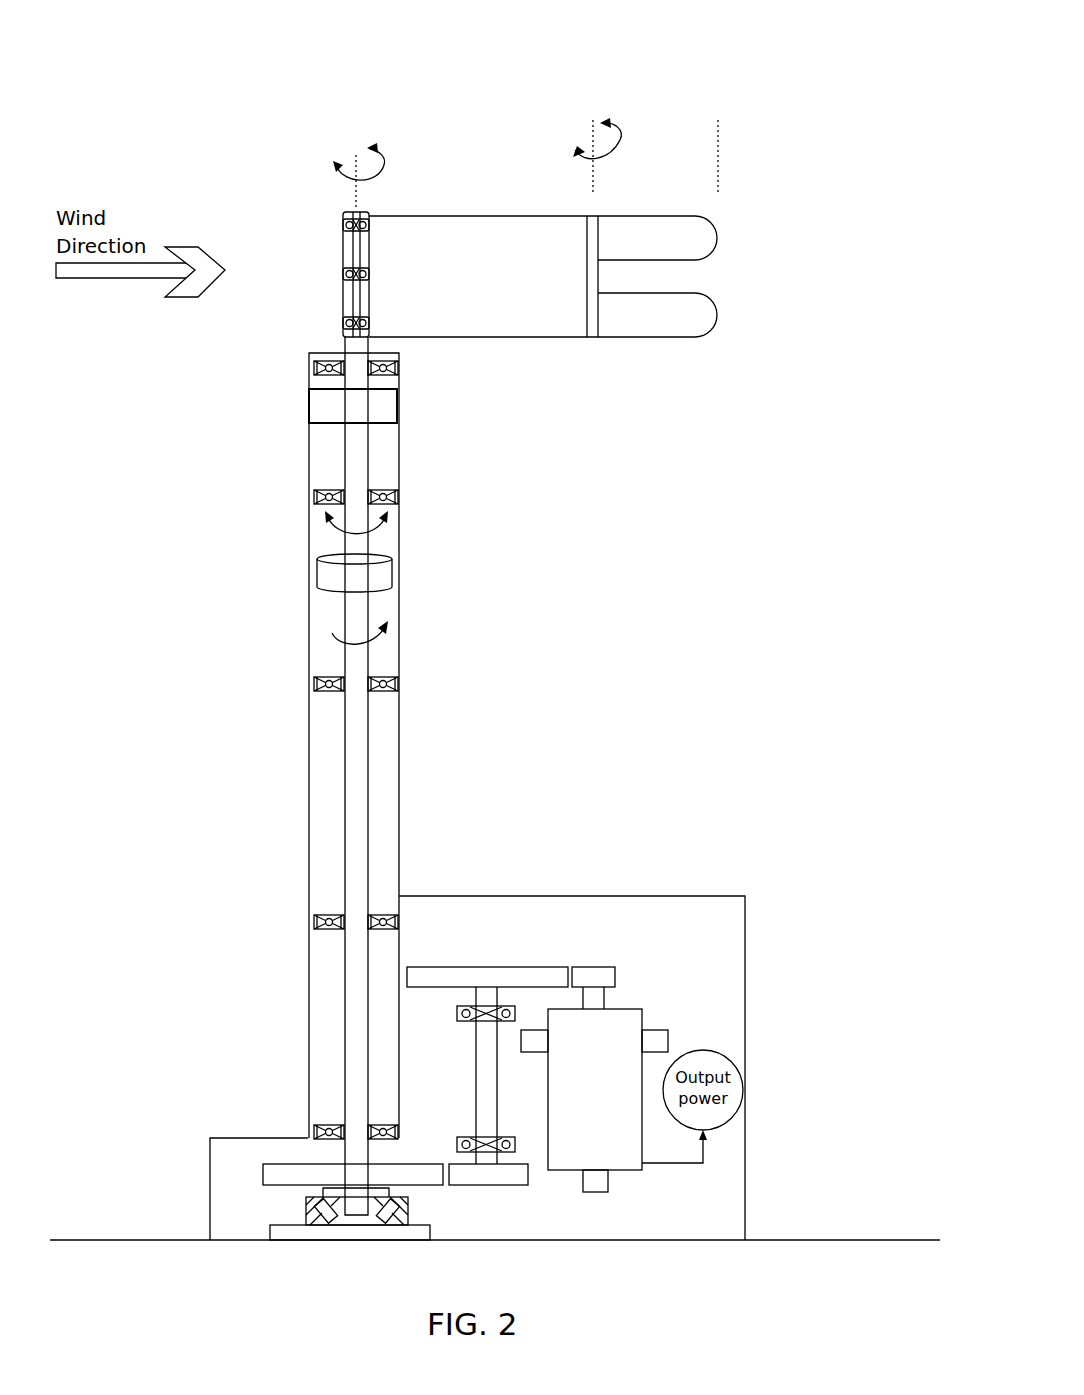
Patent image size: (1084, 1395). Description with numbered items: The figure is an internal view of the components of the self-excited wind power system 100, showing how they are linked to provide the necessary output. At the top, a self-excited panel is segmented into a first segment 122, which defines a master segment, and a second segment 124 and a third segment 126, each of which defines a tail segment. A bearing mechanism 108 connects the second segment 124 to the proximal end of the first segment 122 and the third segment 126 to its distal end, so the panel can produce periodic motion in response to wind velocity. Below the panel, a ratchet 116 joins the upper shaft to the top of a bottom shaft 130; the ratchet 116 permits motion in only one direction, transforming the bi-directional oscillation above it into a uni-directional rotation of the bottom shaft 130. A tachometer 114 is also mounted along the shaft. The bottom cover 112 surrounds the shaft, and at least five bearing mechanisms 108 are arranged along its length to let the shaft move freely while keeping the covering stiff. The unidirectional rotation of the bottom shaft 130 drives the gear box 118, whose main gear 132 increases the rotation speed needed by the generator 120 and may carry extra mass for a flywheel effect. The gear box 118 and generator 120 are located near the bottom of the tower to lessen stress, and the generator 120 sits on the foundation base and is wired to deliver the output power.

The self-excited wind power system 100 is at (203, 72).
The bearing mechanism 108 is at (341, 223).
The bottom cover 112 is at (399, 633).
The tachometer 114 is at (309, 407).
The ratchet 116 is at (317, 575).
The gear box 118 is at (485, 967).
The generator 120 is at (606, 1095).
The first segment 122 is at (478, 215).
The second segment 124 is at (720, 237).
The third segment 126 is at (720, 313).
The bottom shaft 130 is at (368, 867).
The main gear 132 is at (293, 1168).